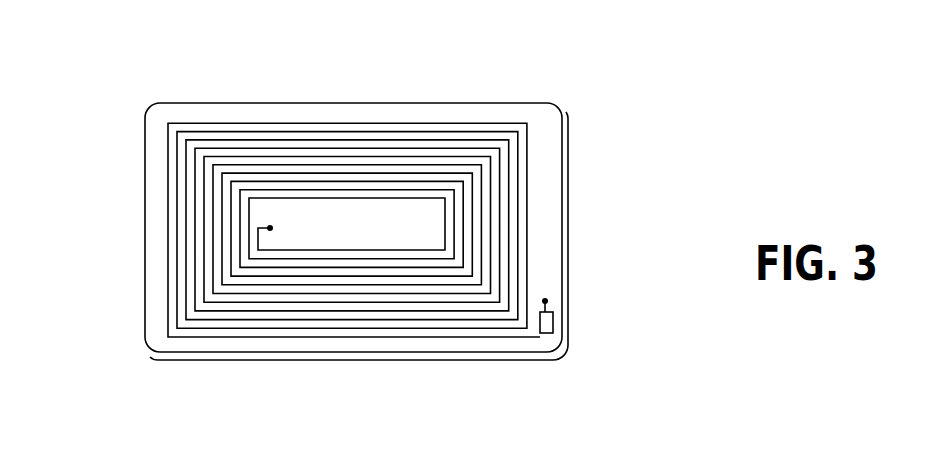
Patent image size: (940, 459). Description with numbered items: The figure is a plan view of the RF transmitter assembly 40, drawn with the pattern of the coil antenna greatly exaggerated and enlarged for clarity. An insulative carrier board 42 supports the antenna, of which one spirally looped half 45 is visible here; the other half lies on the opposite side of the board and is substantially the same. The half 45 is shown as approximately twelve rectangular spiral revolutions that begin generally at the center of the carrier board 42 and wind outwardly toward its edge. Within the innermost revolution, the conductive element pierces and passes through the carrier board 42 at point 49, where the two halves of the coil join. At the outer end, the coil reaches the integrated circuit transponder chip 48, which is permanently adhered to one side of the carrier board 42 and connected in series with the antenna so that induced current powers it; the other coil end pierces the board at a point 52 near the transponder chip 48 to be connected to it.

The RF transmitter assembly 40 is at (462, 229).
The insulative carrier board 42 is at (543, 159).
The spirally looped portion of the antenna 45 is at (345, 288).
The integrated circuit transponder chip 48 is at (546, 323).
The point where the antenna pierces the carrier board 49 is at (270, 228).
The piercing point near the transponder chip 52 is at (547, 300).